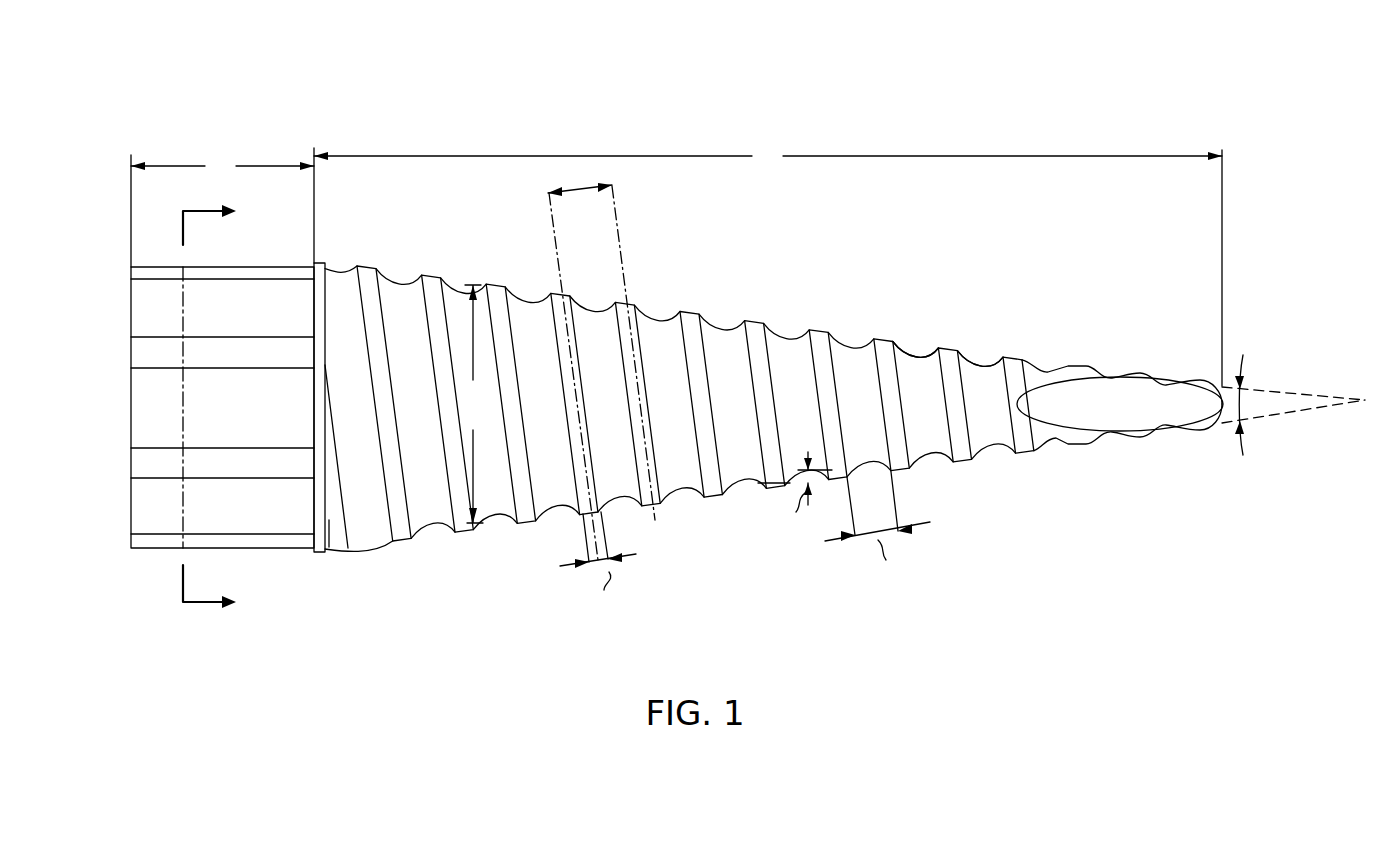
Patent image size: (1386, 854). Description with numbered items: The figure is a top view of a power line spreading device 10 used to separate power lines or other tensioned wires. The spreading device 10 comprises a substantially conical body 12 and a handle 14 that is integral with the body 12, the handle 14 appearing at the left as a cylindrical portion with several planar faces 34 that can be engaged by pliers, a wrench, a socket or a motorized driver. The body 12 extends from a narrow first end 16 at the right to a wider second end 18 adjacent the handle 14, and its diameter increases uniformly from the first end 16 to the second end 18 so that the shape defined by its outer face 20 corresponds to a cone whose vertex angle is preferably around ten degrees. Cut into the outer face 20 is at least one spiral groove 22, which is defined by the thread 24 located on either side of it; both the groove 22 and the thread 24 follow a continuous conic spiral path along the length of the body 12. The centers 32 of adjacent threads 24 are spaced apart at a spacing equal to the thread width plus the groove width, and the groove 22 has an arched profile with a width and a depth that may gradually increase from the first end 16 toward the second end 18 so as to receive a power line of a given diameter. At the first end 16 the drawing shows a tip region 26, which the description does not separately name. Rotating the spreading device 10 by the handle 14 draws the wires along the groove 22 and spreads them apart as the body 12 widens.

The power line spreading device 10 is at (868, 116).
The body 12 is at (684, 497).
The handle 14 is at (148, 549).
The first end 16 is at (1178, 396).
The second end 18 is at (321, 553).
The outer face 20 is at (426, 537).
The spiral groove 22 is at (917, 352).
The thread 24 is at (882, 339).
The tip point 26 is at (1086, 418).
The centers of threads 32 is at (562, 294).
The planar faces 34 is at (131, 392).